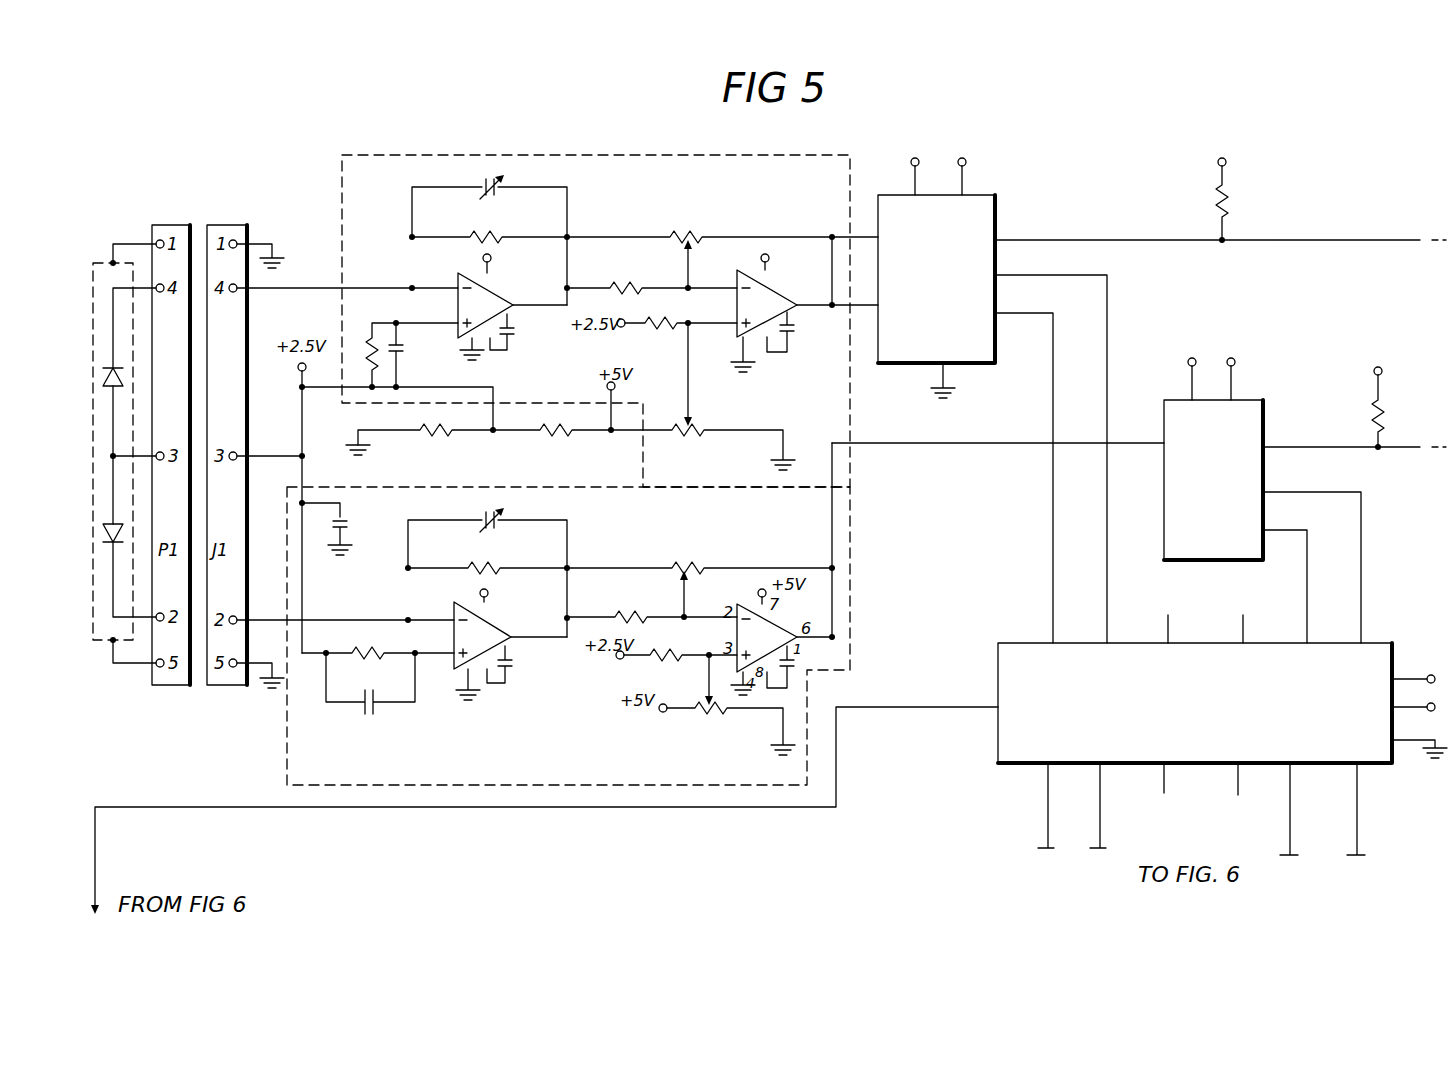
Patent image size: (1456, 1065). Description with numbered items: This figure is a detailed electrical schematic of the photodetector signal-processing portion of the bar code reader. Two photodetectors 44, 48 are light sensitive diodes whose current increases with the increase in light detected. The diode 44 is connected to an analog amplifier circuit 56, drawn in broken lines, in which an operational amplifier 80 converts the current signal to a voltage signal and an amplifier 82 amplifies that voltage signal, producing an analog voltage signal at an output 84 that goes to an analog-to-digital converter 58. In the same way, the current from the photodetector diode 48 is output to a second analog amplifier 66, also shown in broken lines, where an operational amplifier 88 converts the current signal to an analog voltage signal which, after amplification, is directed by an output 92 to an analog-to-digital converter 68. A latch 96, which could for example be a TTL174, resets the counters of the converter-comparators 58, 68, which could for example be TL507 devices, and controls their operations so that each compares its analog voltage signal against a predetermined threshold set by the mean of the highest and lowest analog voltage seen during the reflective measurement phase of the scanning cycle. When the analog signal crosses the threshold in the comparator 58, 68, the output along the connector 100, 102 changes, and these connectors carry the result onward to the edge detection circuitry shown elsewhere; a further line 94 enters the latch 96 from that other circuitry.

The photodetector diode 44 is at (124, 378).
The photodetector diode 48 is at (122, 537).
The analog amplifier circuit 56 is at (593, 155).
The analog-to-digital converter 58 is at (945, 292).
The analog amplifier 66 is at (287, 735).
The analog-to-digital converter 68 is at (1227, 500).
The operational amplifier 80 is at (544, 281).
The amplifier 82 is at (760, 253).
The output 84 is at (866, 312).
The operational amplifier 88 is at (521, 655).
The output 92 is at (944, 445).
The input line from FIG. 6 94 is at (722, 806).
The latch 96 is at (1195, 723).
The connector 100 is at (1325, 240).
The connector 102 is at (1430, 447).